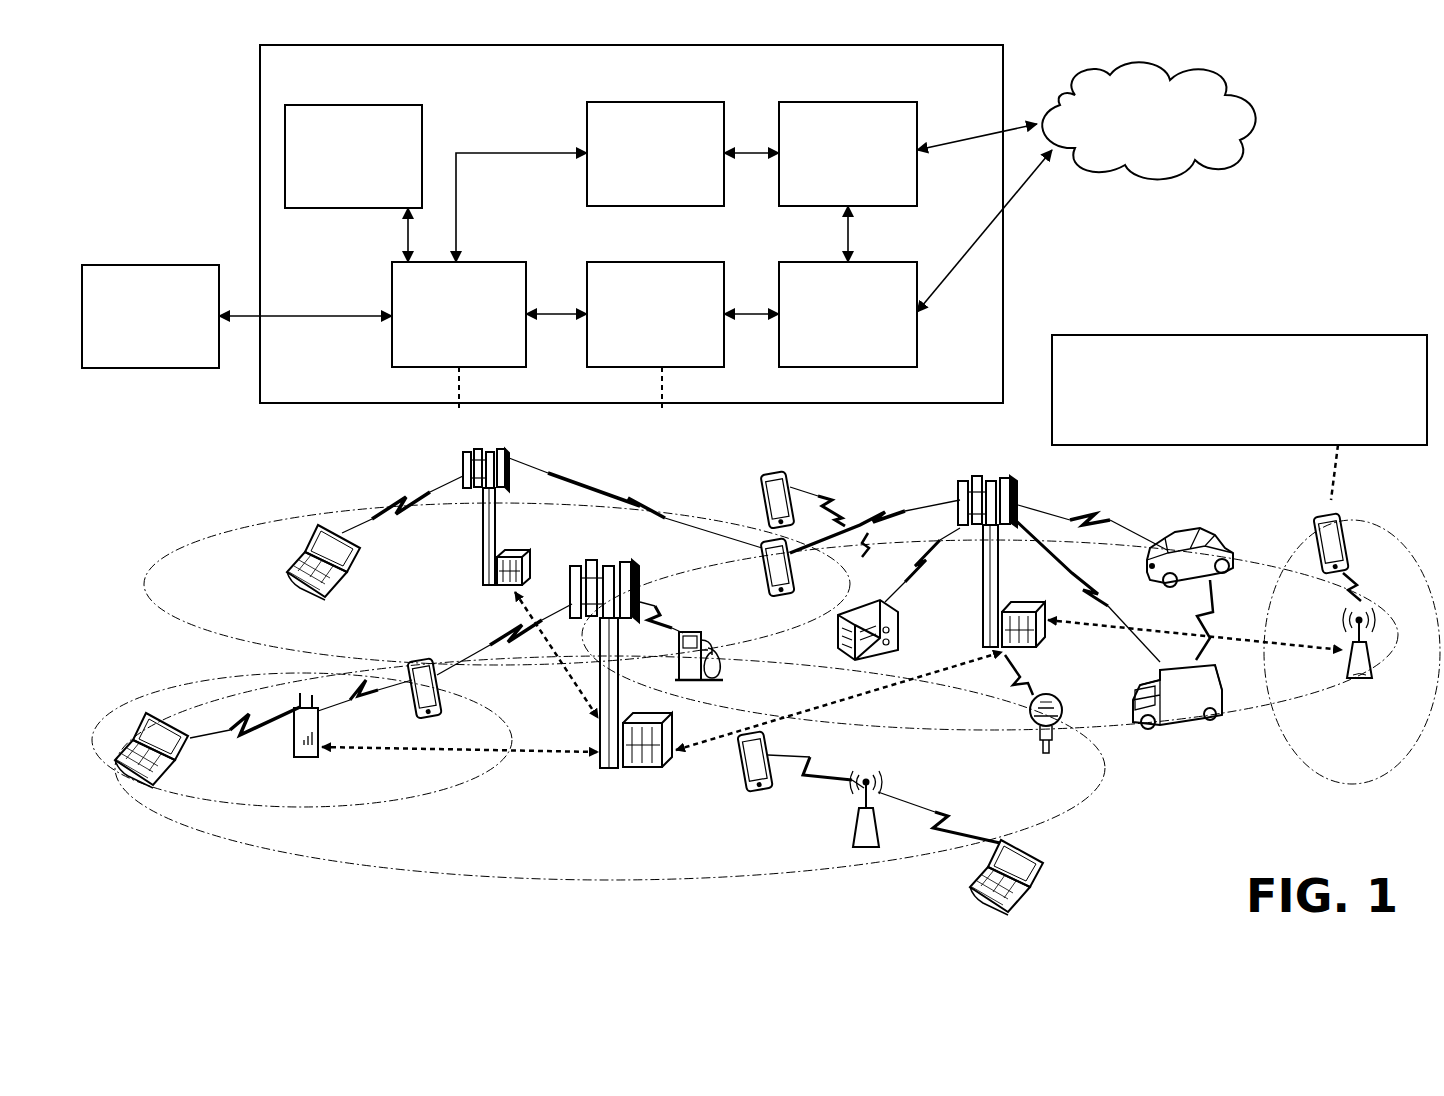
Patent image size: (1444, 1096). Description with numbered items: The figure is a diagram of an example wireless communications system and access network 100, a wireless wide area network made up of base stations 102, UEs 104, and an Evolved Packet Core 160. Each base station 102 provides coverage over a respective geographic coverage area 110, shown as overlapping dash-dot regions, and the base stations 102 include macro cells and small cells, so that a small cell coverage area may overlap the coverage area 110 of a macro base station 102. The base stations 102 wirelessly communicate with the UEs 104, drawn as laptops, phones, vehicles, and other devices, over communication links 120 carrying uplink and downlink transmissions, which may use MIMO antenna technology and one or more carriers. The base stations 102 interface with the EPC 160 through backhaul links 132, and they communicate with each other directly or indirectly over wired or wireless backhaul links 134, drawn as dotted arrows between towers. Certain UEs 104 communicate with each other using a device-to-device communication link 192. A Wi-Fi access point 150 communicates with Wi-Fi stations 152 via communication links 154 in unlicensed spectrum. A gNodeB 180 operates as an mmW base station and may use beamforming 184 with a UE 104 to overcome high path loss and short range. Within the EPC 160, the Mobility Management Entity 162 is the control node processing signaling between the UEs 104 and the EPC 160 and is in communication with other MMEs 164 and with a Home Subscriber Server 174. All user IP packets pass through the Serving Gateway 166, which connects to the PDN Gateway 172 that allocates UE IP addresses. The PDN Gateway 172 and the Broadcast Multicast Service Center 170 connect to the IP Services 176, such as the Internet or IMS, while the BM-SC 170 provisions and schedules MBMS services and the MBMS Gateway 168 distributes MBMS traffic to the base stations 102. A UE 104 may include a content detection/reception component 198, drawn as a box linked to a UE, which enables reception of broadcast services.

The wireless communications system and access network 100 is at (168, 102).
The base stations 102 is at (484, 556).
The UEs 104 is at (330, 590).
The geographic coverage area 110 is at (200, 637).
The communication links 120 is at (403, 497).
The backhaul links 132 is at (459, 412).
The backhaul links 134 is at (568, 660).
The Wi-Fi access point 150 is at (870, 848).
The Wi-Fi stations 152 is at (742, 768).
The communication links 154 is at (812, 760).
The Evolved Packet Core 160 is at (631, 224).
The Mobility Management Entity 162 is at (484, 262).
The other MMEs 164 is at (345, 105).
The Serving Gateway 166 is at (680, 262).
The MBMS Gateway 168 is at (640, 102).
The Broadcast Multicast Service Center 170 is at (892, 102).
The PDN Gateway 172 is at (890, 262).
The Home Subscriber Server 174 is at (186, 265).
The IP Services 176 is at (1192, 78).
The gNodeB 180 is at (1372, 665).
The beamforming 184 is at (1362, 590).
The D2D communication link 192 is at (1232, 600).
The content detection/reception component 198 is at (1378, 335).